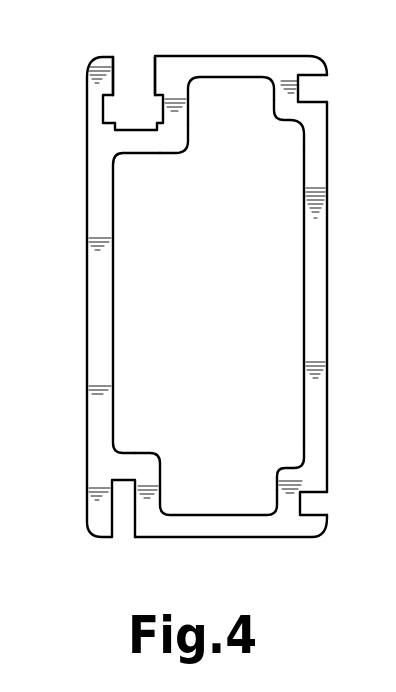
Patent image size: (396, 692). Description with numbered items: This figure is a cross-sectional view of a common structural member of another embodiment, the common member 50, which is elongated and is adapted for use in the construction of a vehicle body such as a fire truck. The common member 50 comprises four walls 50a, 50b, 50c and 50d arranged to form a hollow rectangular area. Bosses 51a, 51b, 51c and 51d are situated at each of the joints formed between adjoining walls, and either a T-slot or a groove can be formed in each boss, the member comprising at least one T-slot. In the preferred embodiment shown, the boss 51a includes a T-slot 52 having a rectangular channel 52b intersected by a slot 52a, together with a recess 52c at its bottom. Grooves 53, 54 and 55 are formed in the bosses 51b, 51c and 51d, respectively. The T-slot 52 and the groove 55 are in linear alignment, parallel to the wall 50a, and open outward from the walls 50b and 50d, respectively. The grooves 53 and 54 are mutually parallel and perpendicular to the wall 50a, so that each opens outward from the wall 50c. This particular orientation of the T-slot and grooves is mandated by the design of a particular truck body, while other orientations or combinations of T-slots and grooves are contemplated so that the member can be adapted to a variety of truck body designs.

The common member 50 is at (87, 240).
The wall 50a is at (87, 277).
The wall 50b is at (238, 57).
The wall 50c is at (320, 277).
The wall 50d is at (225, 537).
The boss 51a is at (177, 140).
The boss 51b is at (279, 120).
The boss 51c is at (281, 462).
The boss 51d is at (153, 462).
The T-slot 52 is at (145, 114).
The slot 52a is at (152, 72).
The rectangular channel 52b is at (104, 113).
The slot bottom 52c is at (137, 130).
The groove 53 is at (318, 88).
The groove 54 is at (313, 502).
The groove 55 is at (123, 522).